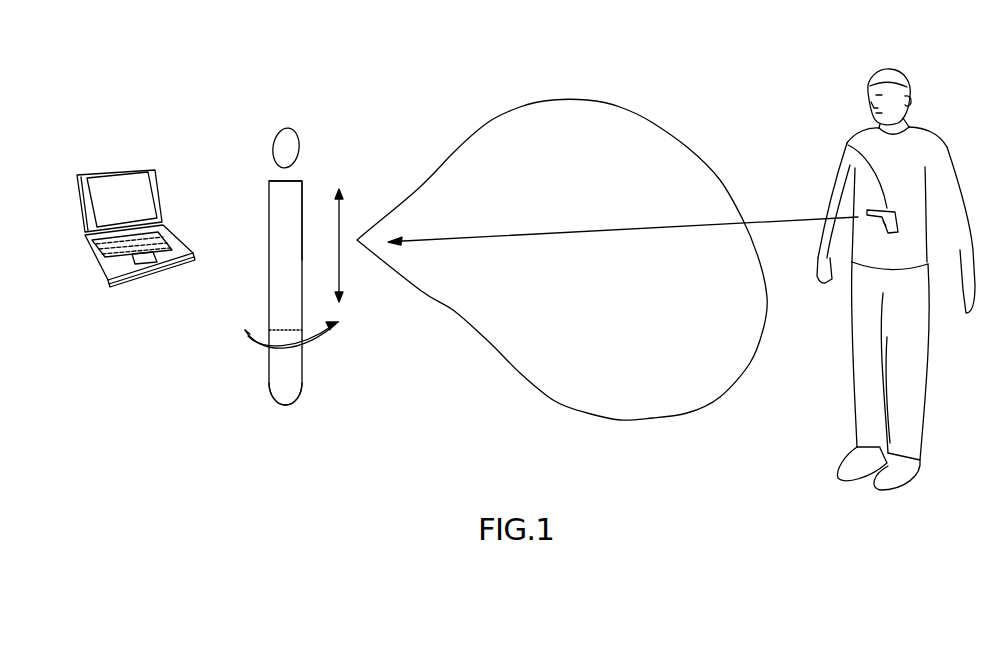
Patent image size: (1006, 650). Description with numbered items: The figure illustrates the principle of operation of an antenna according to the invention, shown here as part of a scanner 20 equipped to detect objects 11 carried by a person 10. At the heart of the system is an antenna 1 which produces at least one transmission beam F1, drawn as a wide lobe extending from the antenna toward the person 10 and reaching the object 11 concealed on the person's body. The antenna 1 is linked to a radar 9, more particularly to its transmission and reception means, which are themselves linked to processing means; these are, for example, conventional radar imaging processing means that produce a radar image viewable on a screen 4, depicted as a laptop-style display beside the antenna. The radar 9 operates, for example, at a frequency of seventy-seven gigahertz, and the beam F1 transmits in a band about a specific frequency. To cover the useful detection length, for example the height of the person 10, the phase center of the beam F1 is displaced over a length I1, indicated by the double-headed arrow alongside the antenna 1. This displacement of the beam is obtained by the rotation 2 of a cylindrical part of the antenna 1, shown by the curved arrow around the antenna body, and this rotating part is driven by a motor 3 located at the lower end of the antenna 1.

The screen 4 is at (120, 174).
The scanner 20 is at (255, 200).
The antenna 1 is at (307, 180).
The radar 9 is at (288, 128).
The motor 3 is at (303, 382).
The rotation 2 is at (332, 333).
The length I1 is at (342, 220).
The transmission beam F1 is at (580, 100).
The person 10 is at (940, 140).
The objects 11 is at (847, 143).